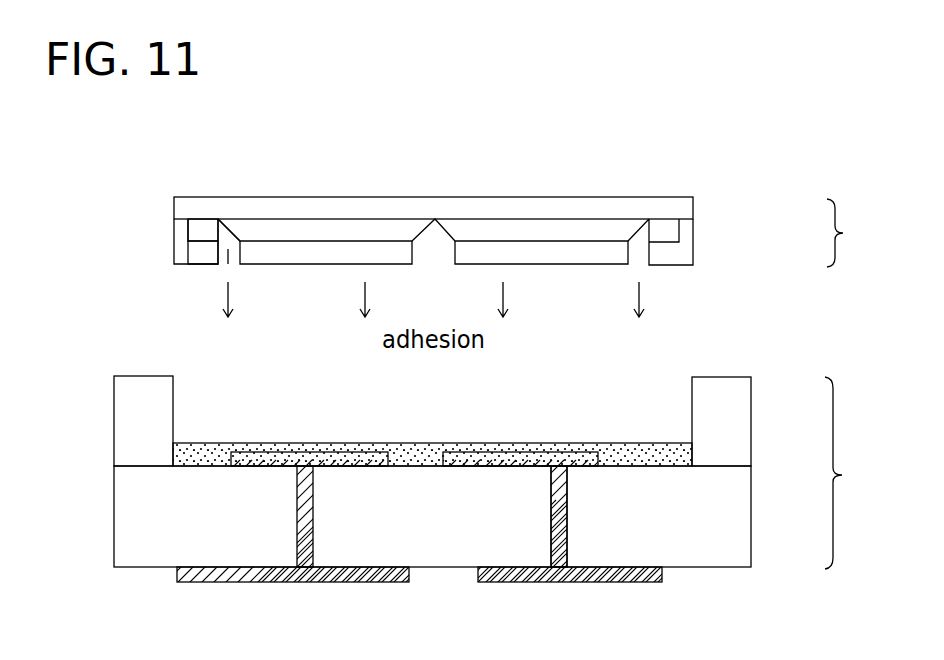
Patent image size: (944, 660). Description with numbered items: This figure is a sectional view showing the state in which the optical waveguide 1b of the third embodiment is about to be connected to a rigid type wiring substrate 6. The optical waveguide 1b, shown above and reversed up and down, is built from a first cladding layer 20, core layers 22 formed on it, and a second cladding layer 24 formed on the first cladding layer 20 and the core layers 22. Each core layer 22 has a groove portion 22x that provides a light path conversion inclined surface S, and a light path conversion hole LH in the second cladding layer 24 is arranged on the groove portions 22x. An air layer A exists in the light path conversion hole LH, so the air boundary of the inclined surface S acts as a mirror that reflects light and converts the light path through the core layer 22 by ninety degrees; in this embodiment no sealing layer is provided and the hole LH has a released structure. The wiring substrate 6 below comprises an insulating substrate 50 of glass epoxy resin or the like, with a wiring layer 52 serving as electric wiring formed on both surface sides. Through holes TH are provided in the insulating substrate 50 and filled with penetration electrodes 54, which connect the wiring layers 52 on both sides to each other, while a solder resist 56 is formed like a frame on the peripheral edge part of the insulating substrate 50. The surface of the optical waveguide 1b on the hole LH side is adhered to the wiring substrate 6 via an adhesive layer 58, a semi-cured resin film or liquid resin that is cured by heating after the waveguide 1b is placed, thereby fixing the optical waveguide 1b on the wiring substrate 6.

The optical waveguide 1b is at (877, 247).
The first cladding layer 20 is at (268, 208).
The core layer 22 is at (293, 227).
The groove portion 22x is at (213, 227).
The light path conversion hole LH is at (213, 252).
The second cladding layer 24 is at (313, 250).
The light path conversion inclined surface S is at (240, 232).
The air layer A is at (233, 257).
The wiring substrate 6 is at (866, 486).
The insulating substrate 50 is at (737, 538).
The wiring layer 52 is at (598, 467).
The penetration electrode 54 is at (562, 532).
The through hole TH is at (550, 500).
The solder resist 56 is at (740, 425).
The adhesive layer 58 is at (412, 448).